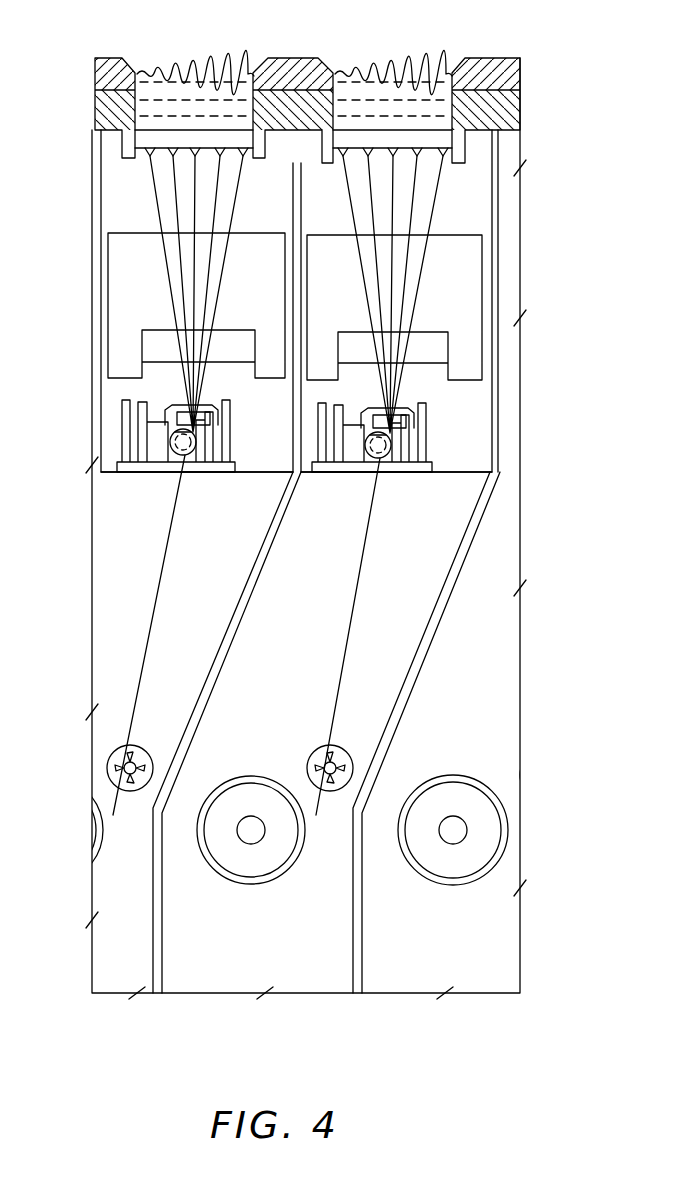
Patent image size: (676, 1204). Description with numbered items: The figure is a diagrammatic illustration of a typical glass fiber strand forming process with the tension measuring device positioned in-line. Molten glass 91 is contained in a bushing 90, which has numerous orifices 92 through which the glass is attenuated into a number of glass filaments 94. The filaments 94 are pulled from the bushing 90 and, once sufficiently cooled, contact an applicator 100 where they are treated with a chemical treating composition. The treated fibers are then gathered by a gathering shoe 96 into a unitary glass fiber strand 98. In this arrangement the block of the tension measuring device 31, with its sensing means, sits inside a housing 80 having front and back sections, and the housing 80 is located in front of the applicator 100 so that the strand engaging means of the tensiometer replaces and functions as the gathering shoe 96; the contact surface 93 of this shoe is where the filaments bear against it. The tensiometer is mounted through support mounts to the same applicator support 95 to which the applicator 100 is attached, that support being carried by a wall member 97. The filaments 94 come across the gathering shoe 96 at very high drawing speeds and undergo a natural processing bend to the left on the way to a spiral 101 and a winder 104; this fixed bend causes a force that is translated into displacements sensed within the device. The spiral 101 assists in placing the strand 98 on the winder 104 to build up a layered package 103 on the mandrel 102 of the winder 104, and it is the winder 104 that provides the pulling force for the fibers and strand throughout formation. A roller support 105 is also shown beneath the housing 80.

The block of the tension measuring device 31 is at (392, 441).
The housing 80 is at (170, 445).
The bushing 90 is at (235, 142).
The glass 91 is at (205, 92).
The orifices 92 is at (198, 157).
The roller contact surface 93 is at (178, 437).
The glass filaments 94 is at (193, 258).
The applicator support 95 is at (313, 467).
The gathering shoe 96 is at (199, 443).
The wall member 97 is at (478, 470).
The unitary glass fiber strand 98 is at (171, 523).
The applicator 100 is at (212, 415).
The spiral 101 is at (136, 760).
The mandrel 102 is at (252, 778).
The layered package 103 is at (233, 777).
The winder 104 is at (253, 898).
The roller support 105 is at (178, 456).